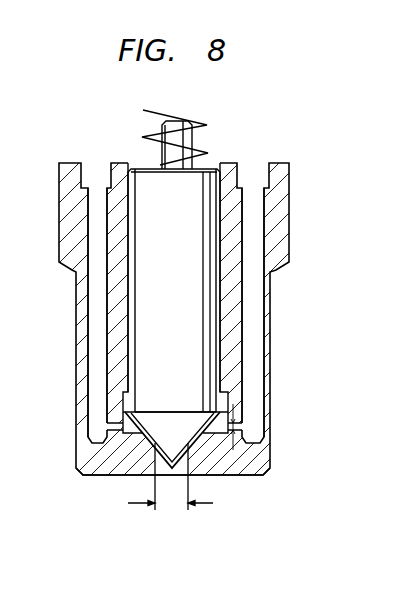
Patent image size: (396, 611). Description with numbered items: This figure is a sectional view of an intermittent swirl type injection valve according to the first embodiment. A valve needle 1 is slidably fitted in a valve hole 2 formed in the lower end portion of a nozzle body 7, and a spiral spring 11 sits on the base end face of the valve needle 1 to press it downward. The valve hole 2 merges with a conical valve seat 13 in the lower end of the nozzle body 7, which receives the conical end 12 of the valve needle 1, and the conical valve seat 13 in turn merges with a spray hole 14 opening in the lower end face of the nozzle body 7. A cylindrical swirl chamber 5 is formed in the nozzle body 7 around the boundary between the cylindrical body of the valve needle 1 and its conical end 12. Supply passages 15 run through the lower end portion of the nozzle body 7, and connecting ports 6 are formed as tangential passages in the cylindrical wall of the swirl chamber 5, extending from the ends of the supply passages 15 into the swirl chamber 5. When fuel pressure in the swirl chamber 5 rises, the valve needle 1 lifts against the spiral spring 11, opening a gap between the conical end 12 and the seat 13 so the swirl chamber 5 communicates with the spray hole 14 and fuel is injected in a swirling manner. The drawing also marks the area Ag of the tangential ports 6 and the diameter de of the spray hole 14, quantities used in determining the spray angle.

The valve needle 1 is at (205, 262).
The valve hole 2 is at (222, 316).
The cylindrical swirl chamber 5 is at (262, 470).
The connecting ports 6 is at (108, 418).
The nozzle body 7 is at (275, 210).
The spiral spring 11 is at (189, 119).
The conical end 12 is at (142, 462).
The conical valve seat 13 is at (200, 452).
The spray hole 14 is at (178, 470).
The supply passages 15 is at (98, 333).
The area of the tangential ports Ag is at (207, 414).
The diameter of the spray hole de is at (170, 516).